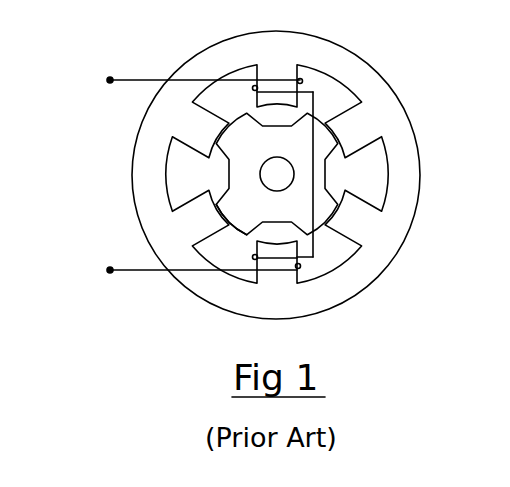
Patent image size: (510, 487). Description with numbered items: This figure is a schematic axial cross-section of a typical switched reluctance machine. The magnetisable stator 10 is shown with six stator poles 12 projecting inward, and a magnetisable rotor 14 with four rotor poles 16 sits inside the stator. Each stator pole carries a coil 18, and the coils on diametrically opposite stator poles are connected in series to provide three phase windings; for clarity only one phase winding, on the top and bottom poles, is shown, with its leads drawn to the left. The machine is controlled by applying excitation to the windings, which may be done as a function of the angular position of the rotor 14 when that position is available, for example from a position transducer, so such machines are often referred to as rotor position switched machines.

The stator 10 is at (360, 72).
The stator poles 12 is at (356, 146).
The rotor 14 is at (232, 173).
The rotor poles 16 is at (230, 205).
The coil 18 is at (289, 77).